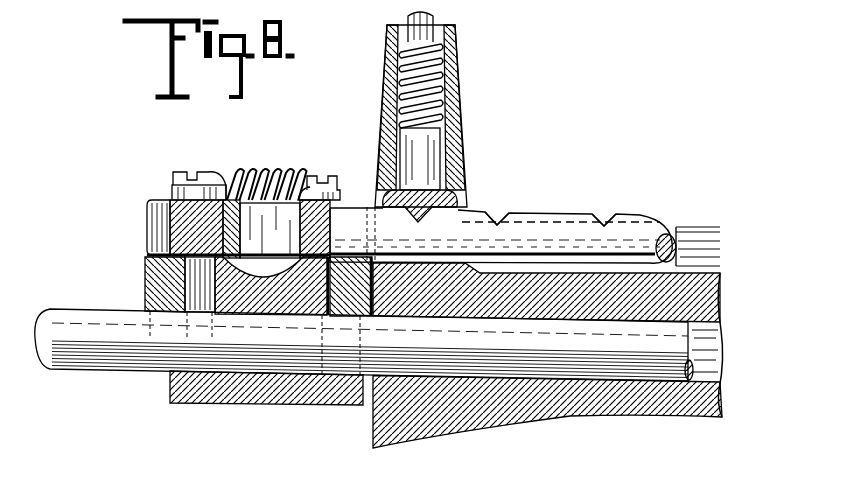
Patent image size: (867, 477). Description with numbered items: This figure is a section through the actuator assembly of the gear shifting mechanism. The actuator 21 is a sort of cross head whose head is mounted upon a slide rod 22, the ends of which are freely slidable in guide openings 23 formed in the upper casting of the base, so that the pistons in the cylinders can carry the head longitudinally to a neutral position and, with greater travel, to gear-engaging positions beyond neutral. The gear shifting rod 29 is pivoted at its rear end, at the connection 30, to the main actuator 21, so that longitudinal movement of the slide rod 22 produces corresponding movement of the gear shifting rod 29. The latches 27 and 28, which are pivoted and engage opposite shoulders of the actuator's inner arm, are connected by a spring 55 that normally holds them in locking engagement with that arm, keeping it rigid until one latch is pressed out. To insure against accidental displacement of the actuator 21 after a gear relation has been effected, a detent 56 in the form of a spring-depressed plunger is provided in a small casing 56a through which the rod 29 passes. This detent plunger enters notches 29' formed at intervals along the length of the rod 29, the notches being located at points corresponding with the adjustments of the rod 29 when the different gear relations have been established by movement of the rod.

The actuator 21 is at (228, 170).
The slide rod 22 is at (523, 414).
The guide openings 23 is at (713, 345).
The latch 27 is at (150, 198).
The latch 28 is at (350, 233).
The gear shifting rod 29 is at (528, 222).
The notches 29' is at (583, 190).
The pivot 30 is at (252, 170).
The spring 55 is at (258, 233).
The detent 56 is at (420, 87).
The casing 56a is at (430, 127).